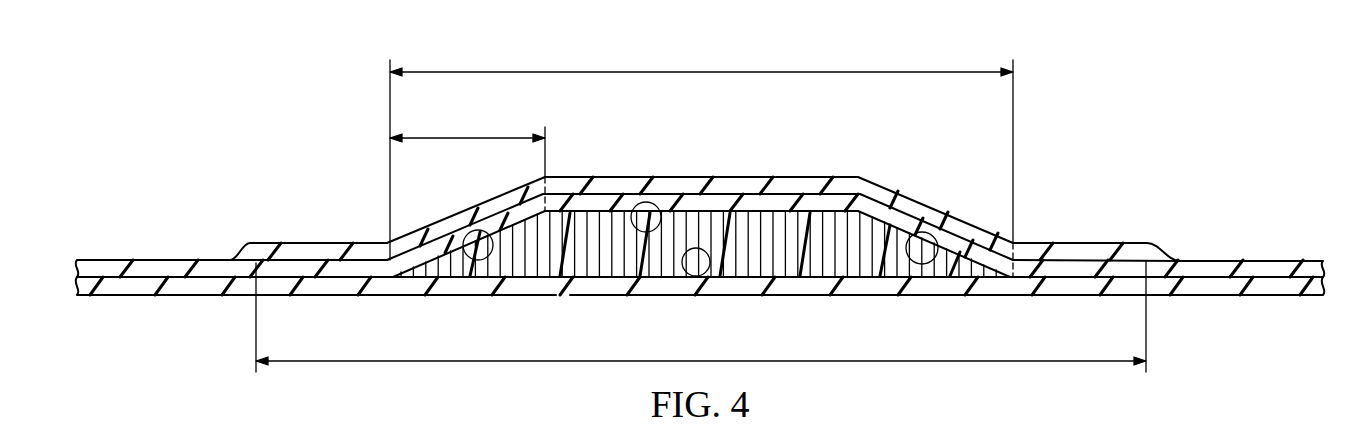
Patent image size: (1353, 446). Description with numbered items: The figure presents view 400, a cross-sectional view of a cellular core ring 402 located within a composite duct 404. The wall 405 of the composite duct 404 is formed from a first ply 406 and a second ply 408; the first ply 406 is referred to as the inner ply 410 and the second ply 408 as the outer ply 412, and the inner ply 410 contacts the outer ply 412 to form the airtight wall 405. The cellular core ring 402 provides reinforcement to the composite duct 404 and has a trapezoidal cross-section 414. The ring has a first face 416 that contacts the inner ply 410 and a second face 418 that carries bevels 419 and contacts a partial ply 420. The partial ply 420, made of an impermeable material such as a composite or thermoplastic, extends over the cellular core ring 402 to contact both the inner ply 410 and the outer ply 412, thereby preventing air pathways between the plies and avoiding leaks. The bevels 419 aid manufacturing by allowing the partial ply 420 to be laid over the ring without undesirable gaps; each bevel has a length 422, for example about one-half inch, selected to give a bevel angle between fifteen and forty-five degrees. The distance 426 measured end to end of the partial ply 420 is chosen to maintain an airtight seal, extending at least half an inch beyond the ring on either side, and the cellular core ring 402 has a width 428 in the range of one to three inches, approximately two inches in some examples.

The view 400 is at (240, 72).
The cellular core ring 402 is at (562, 292).
The composite duct 404 is at (148, 255).
The wall 405 is at (127, 298).
The first ply 406 is at (1258, 298).
The second ply 408 is at (1246, 268).
The inner ply 410 is at (1068, 298).
The outer ply 412 is at (1079, 250).
The trapezoidal cross-section 414 is at (478, 230).
The first face 416 is at (696, 276).
The second face 418 is at (646, 202).
The bevels 419 is at (922, 232).
The partial ply 420 is at (766, 200).
The length 422 is at (467, 138).
The distance 426 is at (480, 363).
The width 428 is at (700, 72).